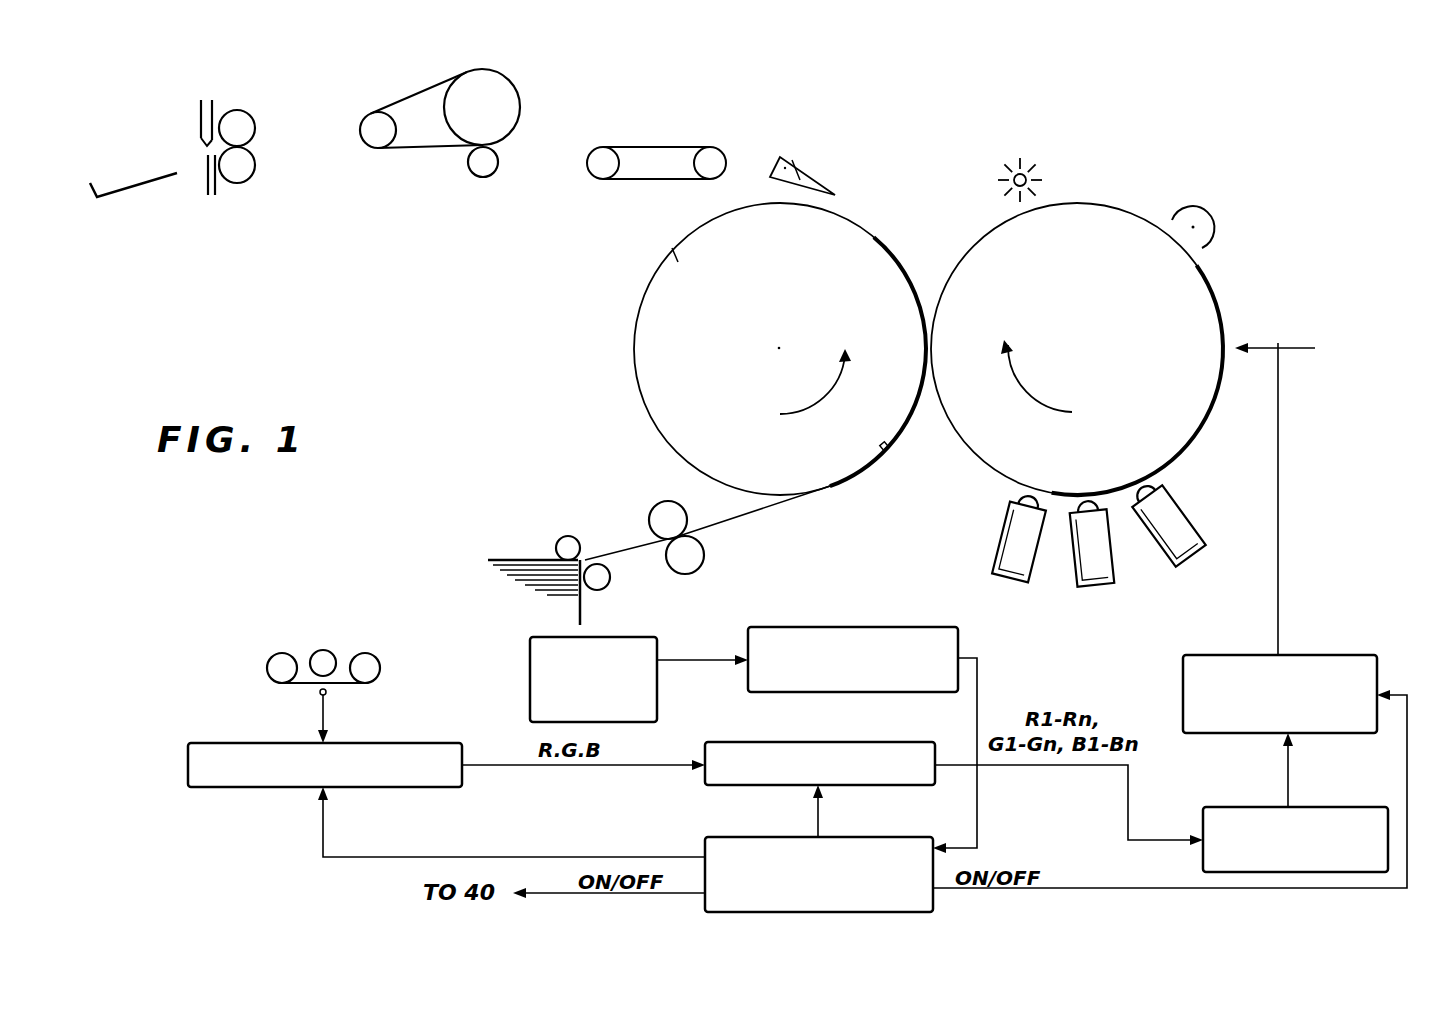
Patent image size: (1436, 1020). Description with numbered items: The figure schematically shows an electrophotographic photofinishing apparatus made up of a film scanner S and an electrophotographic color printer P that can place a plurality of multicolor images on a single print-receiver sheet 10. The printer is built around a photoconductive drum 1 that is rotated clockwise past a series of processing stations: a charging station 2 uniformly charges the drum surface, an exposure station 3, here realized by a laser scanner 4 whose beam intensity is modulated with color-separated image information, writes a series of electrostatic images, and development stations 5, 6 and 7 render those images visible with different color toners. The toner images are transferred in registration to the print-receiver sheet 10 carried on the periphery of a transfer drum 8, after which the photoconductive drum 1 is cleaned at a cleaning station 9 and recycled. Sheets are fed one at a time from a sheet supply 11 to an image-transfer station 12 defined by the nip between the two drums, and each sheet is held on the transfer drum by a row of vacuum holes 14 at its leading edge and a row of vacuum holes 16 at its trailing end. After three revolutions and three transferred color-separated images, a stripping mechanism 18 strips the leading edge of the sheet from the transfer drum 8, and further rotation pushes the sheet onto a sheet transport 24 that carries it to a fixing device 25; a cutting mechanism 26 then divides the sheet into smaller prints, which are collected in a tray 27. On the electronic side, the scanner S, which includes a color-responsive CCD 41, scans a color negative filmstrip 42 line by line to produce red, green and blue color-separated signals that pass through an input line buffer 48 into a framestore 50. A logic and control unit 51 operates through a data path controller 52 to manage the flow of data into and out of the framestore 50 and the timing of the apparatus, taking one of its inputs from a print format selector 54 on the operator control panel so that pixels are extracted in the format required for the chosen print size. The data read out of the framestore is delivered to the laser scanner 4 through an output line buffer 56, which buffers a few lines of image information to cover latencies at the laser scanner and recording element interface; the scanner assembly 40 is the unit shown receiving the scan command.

The photoconductive drum 1 is at (1107, 203).
The charging station 2 is at (1208, 207).
The exposure station 3 is at (1272, 346).
The laser scanner 4 is at (1340, 653).
The development station 5 is at (1180, 545).
The development station 6 is at (1098, 565).
The development station 7 is at (1022, 558).
The transfer drum 8 is at (882, 238).
The cleaning station 9 is at (1017, 170).
The print-receiver sheet 10 is at (775, 512).
The sheet supply 11 is at (498, 550).
The image-transfer station 12 is at (928, 415).
The row of vacuum holes 14 is at (885, 450).
The row of vacuum holes 16 is at (675, 255).
The stripping mechanism 18 is at (803, 177).
The sheet transport 24 is at (665, 147).
The fixing device 25 is at (550, 93).
The cutting mechanism 26 is at (250, 100).
The tray 27 is at (118, 160).
The scanner 40 is at (232, 673).
The color-responsive CCD 41 is at (330, 692).
The color negative filmstrip 42 is at (312, 685).
The input line buffer 48 is at (203, 788).
The framestore 50 is at (725, 788).
The logic and control unit 51 is at (960, 637).
The data path controller 52 is at (875, 835).
The print format selector 54 is at (530, 700).
The output line buffer 56 is at (1337, 805).
The electrophotographic color printer P is at (1045, 135).
The film scanner S is at (410, 668).